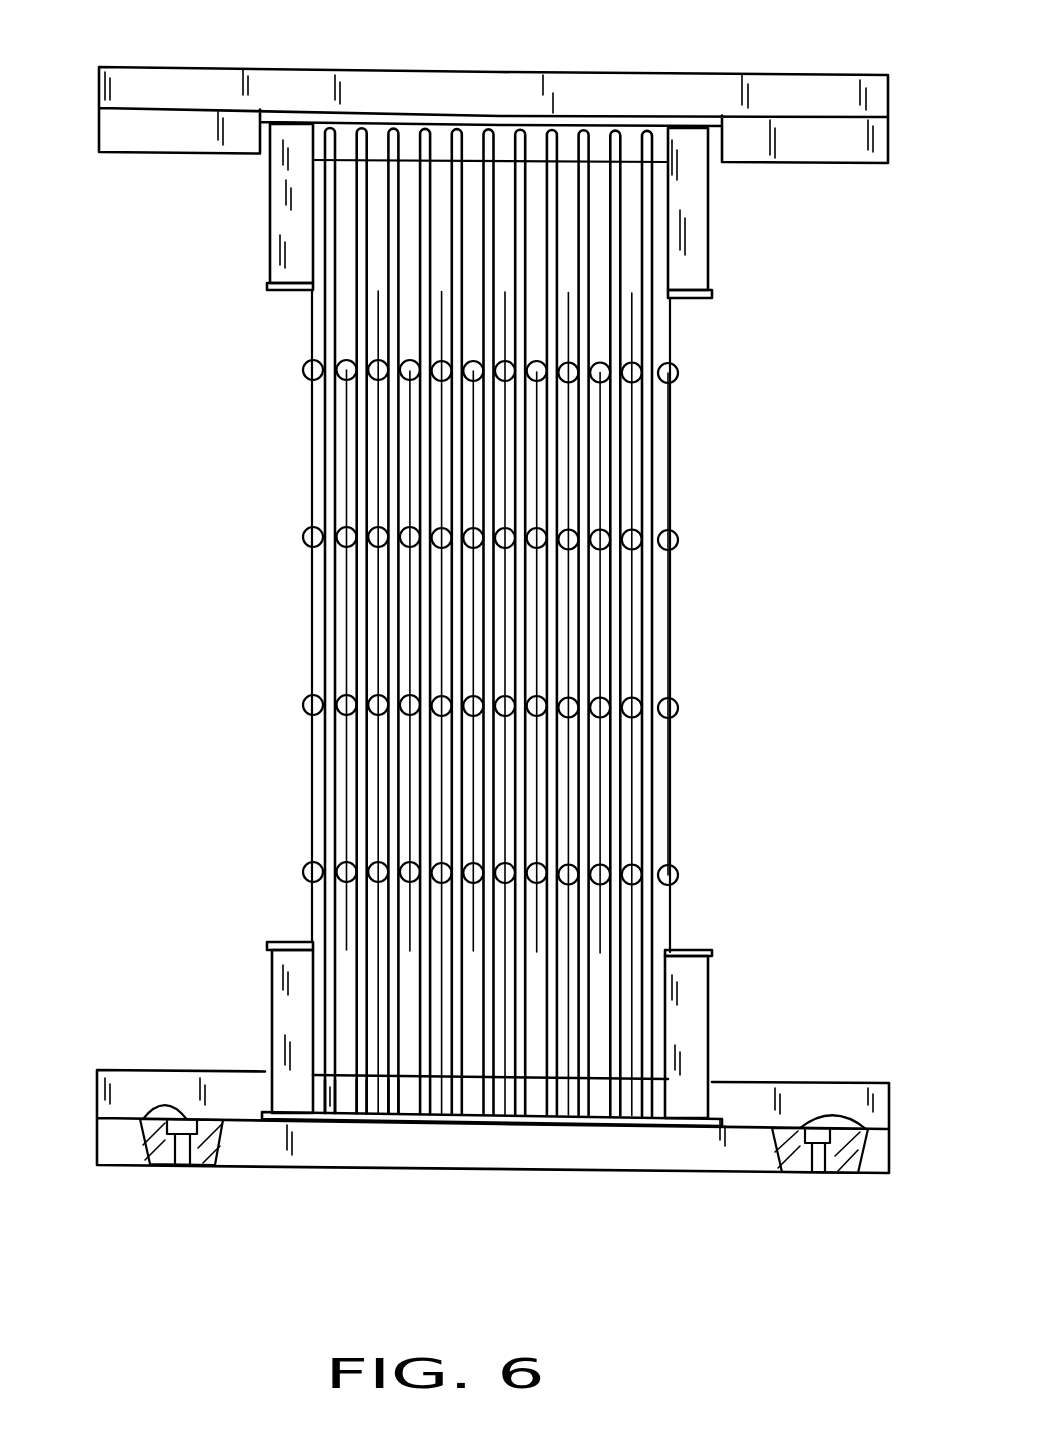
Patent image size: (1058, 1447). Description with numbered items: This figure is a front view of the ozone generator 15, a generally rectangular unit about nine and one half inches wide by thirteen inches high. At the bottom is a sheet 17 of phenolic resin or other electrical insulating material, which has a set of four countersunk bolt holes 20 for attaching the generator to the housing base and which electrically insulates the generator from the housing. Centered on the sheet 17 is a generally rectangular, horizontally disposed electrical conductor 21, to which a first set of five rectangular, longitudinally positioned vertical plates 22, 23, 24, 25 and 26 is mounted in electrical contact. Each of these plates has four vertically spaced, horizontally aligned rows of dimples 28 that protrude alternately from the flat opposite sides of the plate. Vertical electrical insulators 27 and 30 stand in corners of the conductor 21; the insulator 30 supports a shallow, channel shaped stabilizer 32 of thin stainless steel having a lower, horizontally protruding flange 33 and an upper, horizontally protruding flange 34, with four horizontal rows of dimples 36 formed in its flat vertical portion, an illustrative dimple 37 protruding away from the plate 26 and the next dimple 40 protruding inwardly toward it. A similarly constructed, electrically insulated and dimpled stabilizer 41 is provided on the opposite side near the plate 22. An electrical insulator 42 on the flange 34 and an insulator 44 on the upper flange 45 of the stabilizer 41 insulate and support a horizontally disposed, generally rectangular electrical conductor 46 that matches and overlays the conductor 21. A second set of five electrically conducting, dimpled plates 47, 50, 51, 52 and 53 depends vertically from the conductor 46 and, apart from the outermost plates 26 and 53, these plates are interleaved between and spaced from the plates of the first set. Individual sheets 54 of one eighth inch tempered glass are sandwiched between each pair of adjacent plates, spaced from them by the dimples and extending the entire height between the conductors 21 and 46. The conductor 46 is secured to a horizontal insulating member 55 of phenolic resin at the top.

The ozone generator 15 is at (283, 402).
The sheet 17 is at (260, 1138).
The countersunk bolt holes 20 is at (145, 1122).
The electrical conductor 21 is at (625, 1127).
The vertical plate 22 is at (375, 893).
The vertical plate 23 is at (442, 795).
The vertical plate 24 is at (500, 757).
The vertical plate 25 is at (565, 632).
The vertical plate 26 is at (633, 427).
The vertical electrical insulator 27 is at (290, 1007).
The dimples 28 is at (628, 374).
The vertical electrical insulator 30 is at (712, 988).
The stabilizer 32 is at (673, 582).
The lower flange 33 is at (687, 950).
The upper flange 34 is at (695, 298).
The dimples 36 is at (676, 707).
The dimple 37 is at (678, 533).
The dimple 40 is at (662, 527).
The stabilizer 41 is at (310, 545).
The electrical insulator 42 is at (692, 220).
The insulator 44 is at (290, 210).
The upper flange 45 is at (285, 292).
The electrical conductor 46 is at (465, 120).
The dimpled plate 47 is at (600, 633).
The dimpled plate 50 is at (537, 760).
The dimpled plate 51 is at (477, 803).
The dimpled plate 52 is at (408, 848).
The dimpled plate 53 is at (347, 913).
The glass sheets 54 is at (330, 1105).
The horizontal insulating member 55 is at (607, 95).